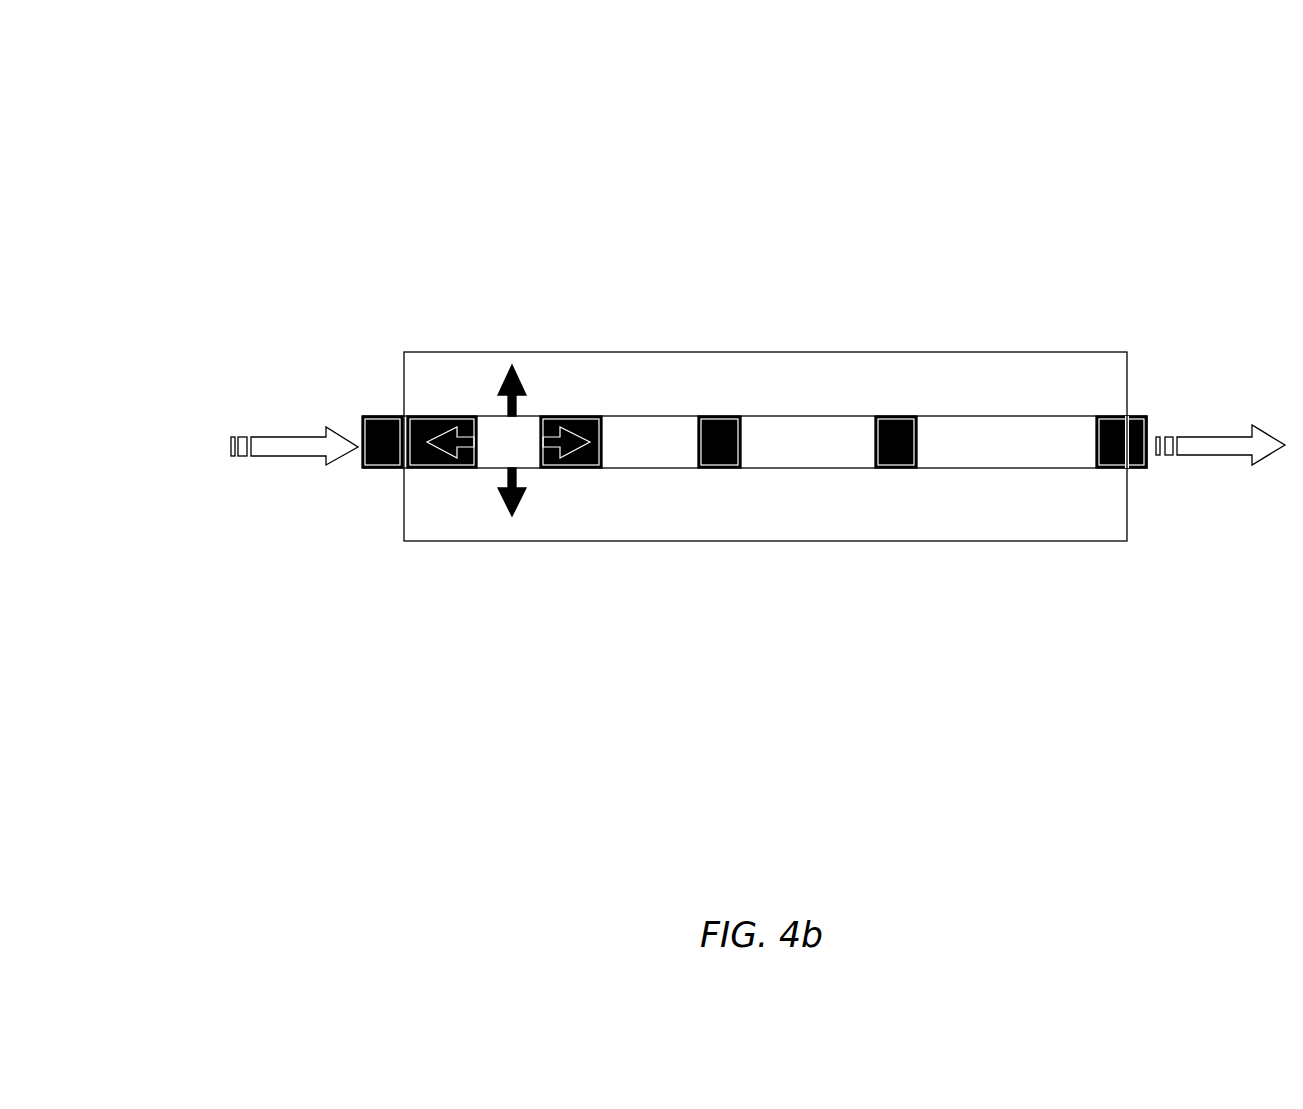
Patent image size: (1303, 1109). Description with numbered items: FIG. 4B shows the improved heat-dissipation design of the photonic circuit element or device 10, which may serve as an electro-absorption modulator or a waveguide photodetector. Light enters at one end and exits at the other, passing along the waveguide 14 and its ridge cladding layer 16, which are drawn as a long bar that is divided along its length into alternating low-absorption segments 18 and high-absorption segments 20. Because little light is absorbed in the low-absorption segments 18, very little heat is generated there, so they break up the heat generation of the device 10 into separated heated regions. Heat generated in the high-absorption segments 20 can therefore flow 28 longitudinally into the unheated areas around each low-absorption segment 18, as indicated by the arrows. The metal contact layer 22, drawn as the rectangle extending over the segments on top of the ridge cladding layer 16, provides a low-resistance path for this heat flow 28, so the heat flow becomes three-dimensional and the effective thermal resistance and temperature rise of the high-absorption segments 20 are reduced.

The photonic circuit element or device 10 is at (1048, 242).
The waveguide 14 is at (358, 507).
The ridge cladding layer 16 is at (380, 470).
The low-absorption segments 18 is at (1108, 418).
The high-absorption segments 20 is at (1005, 468).
The metal contact layer 22 is at (1070, 358).
The heat flow 28 is at (490, 508).